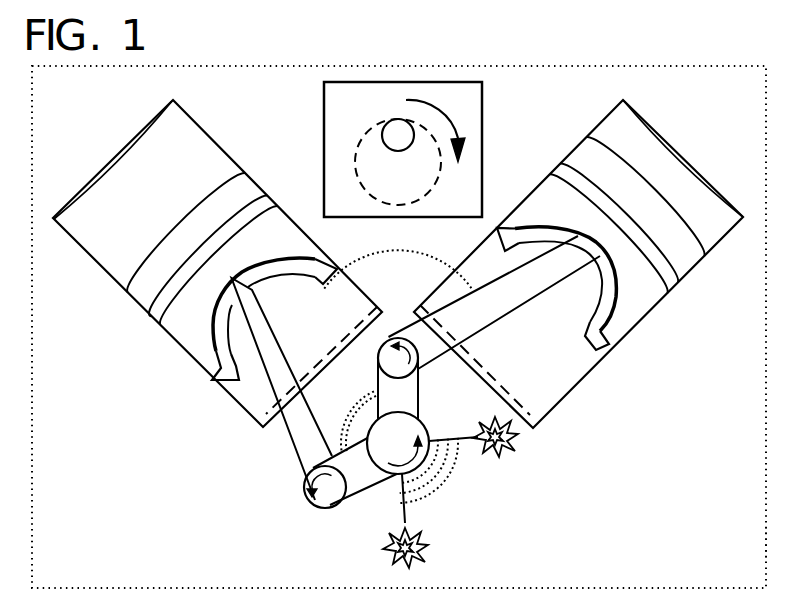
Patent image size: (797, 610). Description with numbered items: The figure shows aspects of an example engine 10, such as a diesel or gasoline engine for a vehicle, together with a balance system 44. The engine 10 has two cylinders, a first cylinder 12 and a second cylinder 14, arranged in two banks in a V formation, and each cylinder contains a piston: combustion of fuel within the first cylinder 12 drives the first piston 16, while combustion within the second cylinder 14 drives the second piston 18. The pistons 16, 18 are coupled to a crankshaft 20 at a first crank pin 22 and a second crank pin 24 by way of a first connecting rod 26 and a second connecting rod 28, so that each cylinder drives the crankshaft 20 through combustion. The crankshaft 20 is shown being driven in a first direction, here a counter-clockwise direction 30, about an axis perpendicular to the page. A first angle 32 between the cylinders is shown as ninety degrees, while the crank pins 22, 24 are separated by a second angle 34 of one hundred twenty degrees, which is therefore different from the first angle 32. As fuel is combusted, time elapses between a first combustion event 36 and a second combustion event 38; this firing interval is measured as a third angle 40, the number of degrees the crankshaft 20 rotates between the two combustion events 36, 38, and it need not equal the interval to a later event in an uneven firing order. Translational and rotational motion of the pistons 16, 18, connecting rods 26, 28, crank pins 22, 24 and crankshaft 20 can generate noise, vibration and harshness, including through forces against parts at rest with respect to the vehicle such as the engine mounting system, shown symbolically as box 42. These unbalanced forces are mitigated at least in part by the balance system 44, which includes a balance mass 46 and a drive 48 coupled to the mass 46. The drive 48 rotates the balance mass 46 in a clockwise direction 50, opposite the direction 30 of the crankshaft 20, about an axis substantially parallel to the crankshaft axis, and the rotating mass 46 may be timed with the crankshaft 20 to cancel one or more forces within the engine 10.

The engine 10 is at (677, 59).
The first cylinder 12 is at (587, 138).
The second cylinder 14 is at (221, 148).
The first piston 16 is at (556, 212).
The second piston 18 is at (282, 246).
The crankshaft 20 is at (422, 424).
The first crank pin 22 is at (408, 377).
The second crank pin 24 is at (319, 508).
The first connecting rod 26 is at (490, 326).
The second connecting rod 28 is at (291, 455).
The counter-clockwise direction 30 is at (402, 451).
The first angle 32 is at (427, 260).
The second angle 34 is at (372, 391).
The first combustion event 36 is at (424, 557).
The second combustion event 38 is at (512, 446).
The third angle 40 is at (442, 485).
The engine mounting system 42 is at (766, 527).
The balance system 44 is at (482, 107).
The balance mass 46 is at (390, 121).
The drive 48 is at (355, 166).
The clockwise direction 50 is at (444, 107).